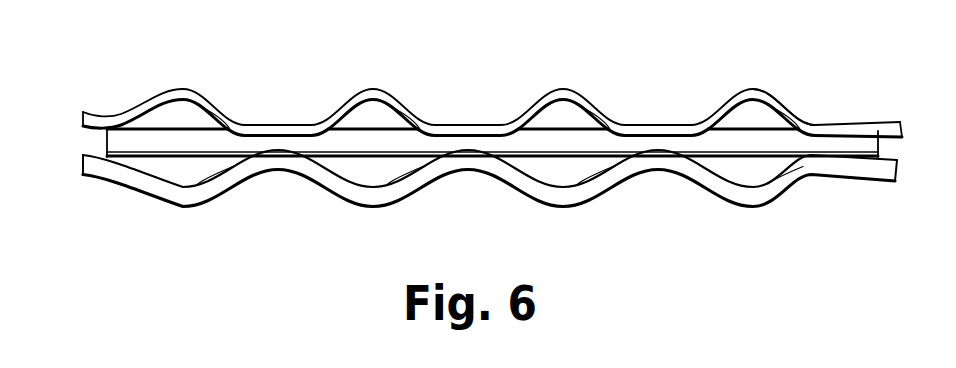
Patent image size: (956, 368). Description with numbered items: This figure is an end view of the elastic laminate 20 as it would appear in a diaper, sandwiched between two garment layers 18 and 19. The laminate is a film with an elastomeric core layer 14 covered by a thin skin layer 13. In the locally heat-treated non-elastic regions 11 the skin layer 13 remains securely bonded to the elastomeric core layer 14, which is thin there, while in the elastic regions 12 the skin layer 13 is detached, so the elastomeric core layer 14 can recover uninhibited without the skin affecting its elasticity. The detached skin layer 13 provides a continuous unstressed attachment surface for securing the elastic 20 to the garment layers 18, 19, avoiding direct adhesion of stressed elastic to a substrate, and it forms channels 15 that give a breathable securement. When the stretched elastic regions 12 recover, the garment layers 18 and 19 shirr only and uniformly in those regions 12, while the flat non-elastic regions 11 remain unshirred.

The non-elastic regions 11 is at (284, 125).
The elastic regions 12 is at (748, 158).
The skin layer 13 is at (407, 113).
The elastomeric core layer 14 is at (357, 145).
The channels 15 is at (726, 136).
The garment layer 18 is at (792, 105).
The garment layer 19 is at (150, 182).
The elastic laminate 20 is at (84, 136).